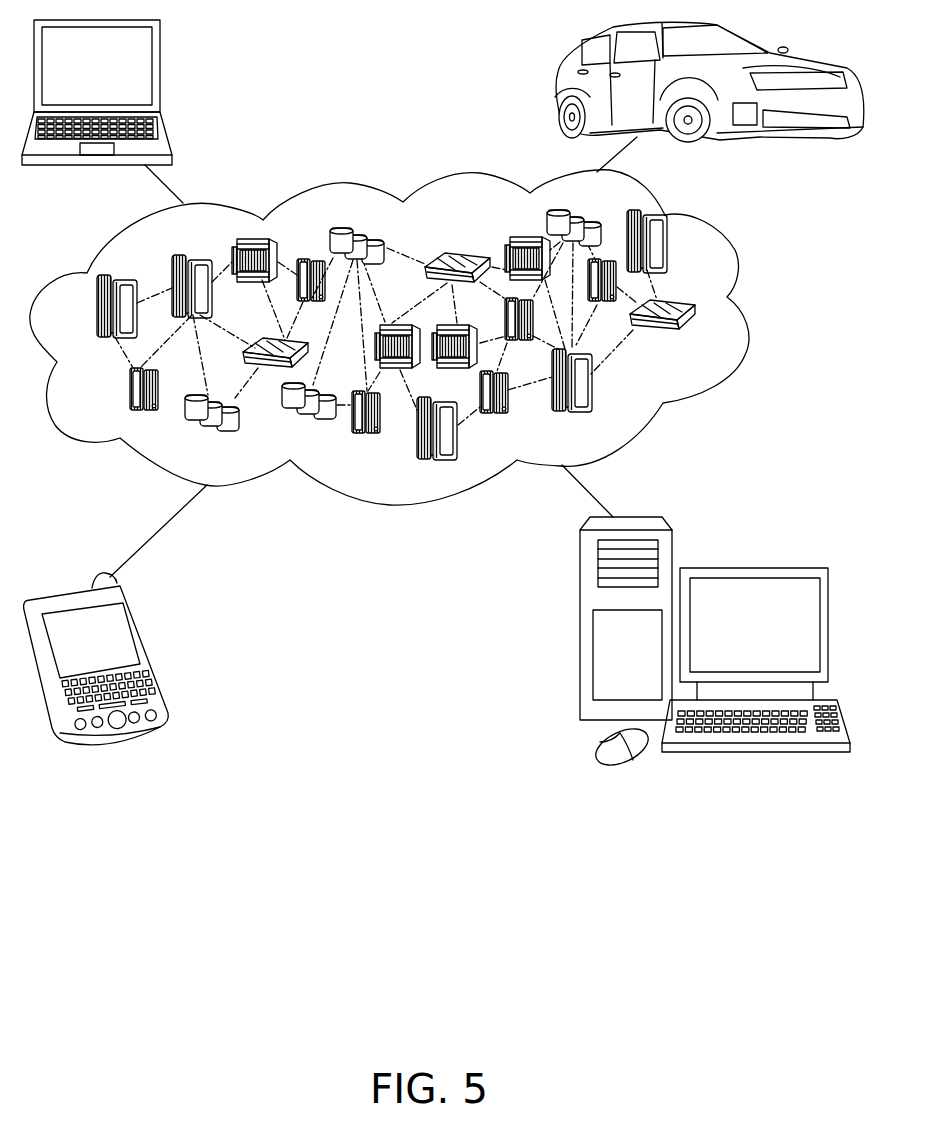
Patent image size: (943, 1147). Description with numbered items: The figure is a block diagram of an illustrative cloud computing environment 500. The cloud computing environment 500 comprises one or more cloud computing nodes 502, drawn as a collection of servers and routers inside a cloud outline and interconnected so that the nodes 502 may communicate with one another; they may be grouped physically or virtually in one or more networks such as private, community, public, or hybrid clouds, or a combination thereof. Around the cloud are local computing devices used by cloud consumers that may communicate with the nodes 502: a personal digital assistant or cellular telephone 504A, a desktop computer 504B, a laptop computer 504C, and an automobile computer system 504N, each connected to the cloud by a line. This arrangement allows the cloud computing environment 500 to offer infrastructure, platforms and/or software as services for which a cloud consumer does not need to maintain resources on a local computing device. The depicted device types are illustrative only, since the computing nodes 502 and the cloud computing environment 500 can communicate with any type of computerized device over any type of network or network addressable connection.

The cloud computing environment 500 is at (707, 310).
The cloud computing nodes 502 is at (705, 343).
The personal digital assistant (PDA) or cellular telephone 504A is at (138, 621).
The desktop computer 504B is at (742, 568).
The laptop computer 504C is at (160, 55).
The automobile computer system 504N is at (555, 91).